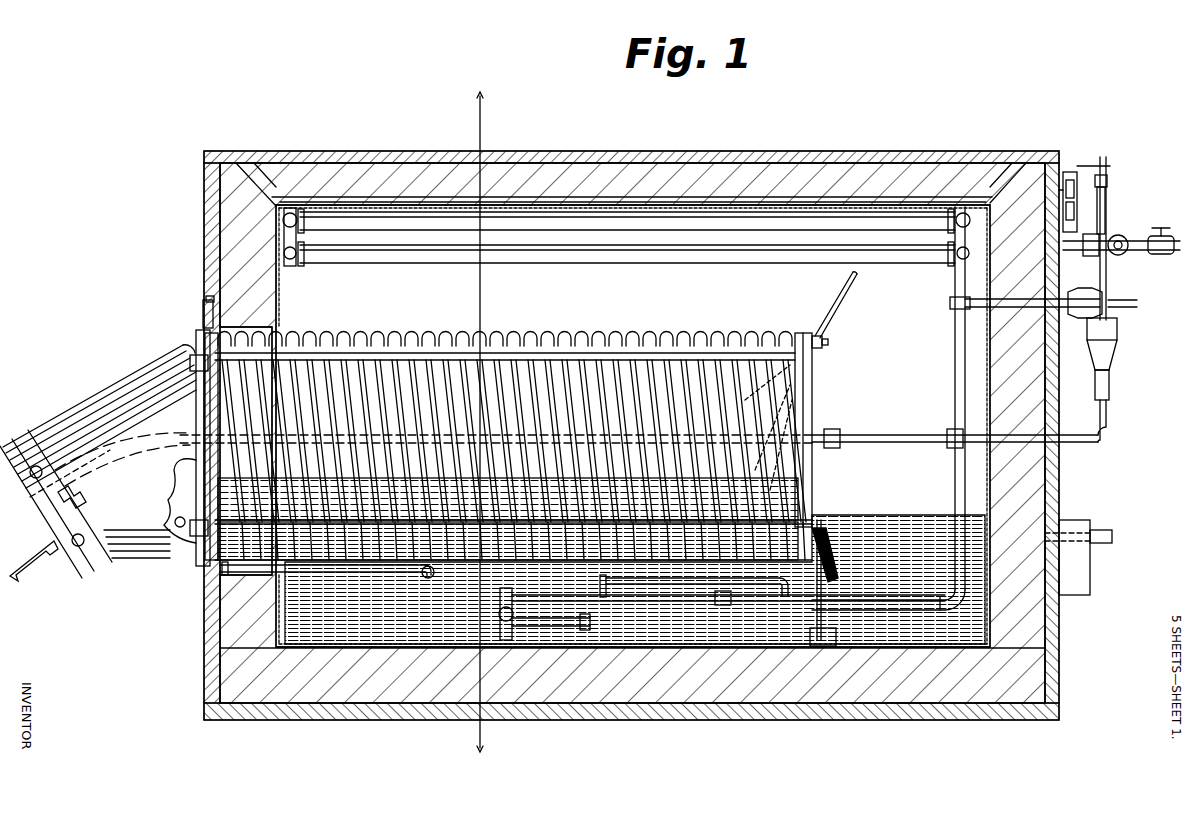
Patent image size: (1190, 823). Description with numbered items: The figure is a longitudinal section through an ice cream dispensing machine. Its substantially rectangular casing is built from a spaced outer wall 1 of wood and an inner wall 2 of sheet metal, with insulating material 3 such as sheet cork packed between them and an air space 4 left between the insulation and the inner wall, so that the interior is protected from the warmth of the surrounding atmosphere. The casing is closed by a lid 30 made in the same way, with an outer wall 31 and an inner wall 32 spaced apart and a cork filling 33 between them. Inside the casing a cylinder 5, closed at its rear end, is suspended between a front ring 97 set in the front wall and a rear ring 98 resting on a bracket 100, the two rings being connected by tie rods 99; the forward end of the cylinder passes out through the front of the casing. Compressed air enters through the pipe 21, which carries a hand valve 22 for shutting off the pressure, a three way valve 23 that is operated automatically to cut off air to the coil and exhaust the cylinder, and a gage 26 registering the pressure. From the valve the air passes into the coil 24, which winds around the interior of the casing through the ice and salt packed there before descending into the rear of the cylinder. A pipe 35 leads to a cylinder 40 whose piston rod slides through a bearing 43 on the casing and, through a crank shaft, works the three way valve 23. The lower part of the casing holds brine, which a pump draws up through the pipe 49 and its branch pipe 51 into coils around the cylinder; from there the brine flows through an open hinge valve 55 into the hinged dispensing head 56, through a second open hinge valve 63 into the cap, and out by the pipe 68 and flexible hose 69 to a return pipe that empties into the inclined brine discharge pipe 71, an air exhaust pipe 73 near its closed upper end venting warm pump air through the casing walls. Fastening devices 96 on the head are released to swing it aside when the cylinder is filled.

The outer wall 1 is at (725, 712).
The inner wall 2 is at (487, 424).
The insulating material 3 is at (600, 625).
The air space 4 is at (956, 366).
The cylinder 5 is at (776, 336).
The pipe 21 is at (1160, 228).
The hand valve 22 is at (1128, 236).
The three way valve 23 is at (1120, 255).
The coil 24 is at (632, 258).
The gage 26 is at (1100, 200).
The lid 30 is at (850, 152).
The outer wall of lid 31 is at (772, 160).
The inner wall of lid 32 is at (728, 190).
The cork filling 33 is at (648, 162).
The pipe 35 is at (880, 440).
The cylinder 40 is at (1117, 322).
The bearing 43 is at (1080, 185).
The pipe 49 is at (684, 597).
The pipe 51 is at (600, 612).
The open hinge valve 55 is at (181, 516).
The head 56 is at (66, 414).
The open hinge valve 63 is at (72, 553).
The pipe 68 is at (30, 496).
The flexible hose 69 is at (104, 435).
The brine discharge pipe 71 is at (800, 462).
The air exhaust pipe 73 is at (832, 326).
The fastening devices 96 is at (196, 340).
The front ring 97 is at (208, 300).
The rear ring 98 is at (820, 341).
The tie rods 99 is at (545, 352).
The bracket 100 is at (825, 548).